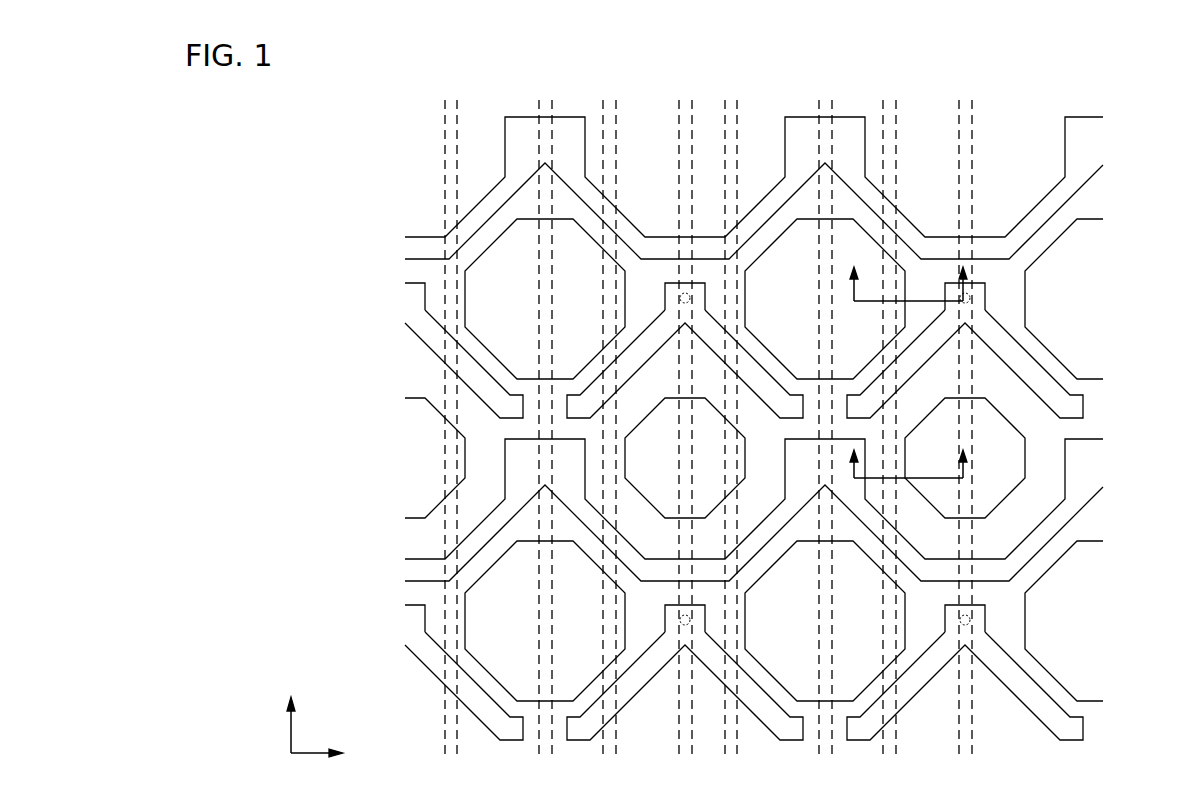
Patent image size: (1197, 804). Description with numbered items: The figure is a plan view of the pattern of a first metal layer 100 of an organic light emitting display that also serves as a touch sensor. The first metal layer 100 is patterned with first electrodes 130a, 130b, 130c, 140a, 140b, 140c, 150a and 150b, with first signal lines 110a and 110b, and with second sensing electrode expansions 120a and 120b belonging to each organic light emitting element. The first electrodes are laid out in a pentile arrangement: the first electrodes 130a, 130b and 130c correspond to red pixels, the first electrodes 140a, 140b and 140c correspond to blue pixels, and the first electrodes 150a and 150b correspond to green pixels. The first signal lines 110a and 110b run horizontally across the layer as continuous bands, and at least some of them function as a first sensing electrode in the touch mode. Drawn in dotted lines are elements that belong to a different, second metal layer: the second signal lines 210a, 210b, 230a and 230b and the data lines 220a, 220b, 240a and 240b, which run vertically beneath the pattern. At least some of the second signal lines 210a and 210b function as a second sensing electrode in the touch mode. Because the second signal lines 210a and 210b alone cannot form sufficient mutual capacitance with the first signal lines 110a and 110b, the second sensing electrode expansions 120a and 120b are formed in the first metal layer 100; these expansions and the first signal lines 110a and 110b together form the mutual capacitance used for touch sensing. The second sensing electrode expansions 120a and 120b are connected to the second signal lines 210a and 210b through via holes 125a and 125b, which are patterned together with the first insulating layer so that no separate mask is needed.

The first metal layer 100 is at (1152, 72).
The first signal line 110a is at (410, 250).
The first signal line 110b is at (410, 571).
The second sensing electrode expansion 120a is at (628, 347).
The second sensing electrode expansion 120b is at (1035, 363).
The via hole 125a is at (680, 299).
The via hole 125b is at (970, 300).
The first electrode 130a is at (500, 386).
The first electrode 130b is at (779, 684).
The first electrode 130c is at (1065, 235).
The first electrode 140a is at (490, 674).
The first electrode 140b is at (770, 350).
The first electrode 140c is at (1052, 565).
The first electrode 150a is at (625, 459).
The first electrode 150b is at (1023, 458).
The second signal line 210a is at (685, 100).
The second signal line 210b is at (965, 100).
The data line 220a is at (609, 100).
The data line 220b is at (889, 100).
The second signal line 230a is at (545, 100).
The second signal line 230b is at (825, 100).
The data line 240a is at (451, 100).
The data line 240b is at (731, 100).